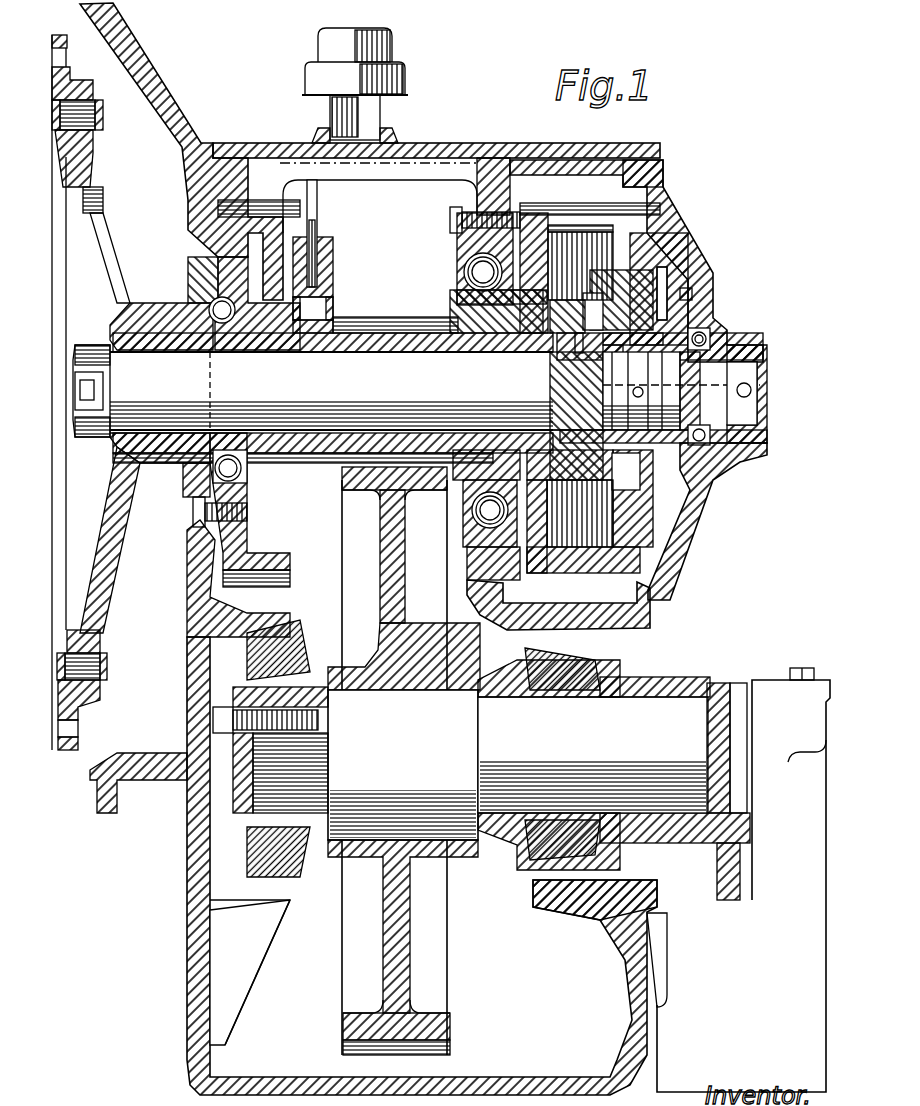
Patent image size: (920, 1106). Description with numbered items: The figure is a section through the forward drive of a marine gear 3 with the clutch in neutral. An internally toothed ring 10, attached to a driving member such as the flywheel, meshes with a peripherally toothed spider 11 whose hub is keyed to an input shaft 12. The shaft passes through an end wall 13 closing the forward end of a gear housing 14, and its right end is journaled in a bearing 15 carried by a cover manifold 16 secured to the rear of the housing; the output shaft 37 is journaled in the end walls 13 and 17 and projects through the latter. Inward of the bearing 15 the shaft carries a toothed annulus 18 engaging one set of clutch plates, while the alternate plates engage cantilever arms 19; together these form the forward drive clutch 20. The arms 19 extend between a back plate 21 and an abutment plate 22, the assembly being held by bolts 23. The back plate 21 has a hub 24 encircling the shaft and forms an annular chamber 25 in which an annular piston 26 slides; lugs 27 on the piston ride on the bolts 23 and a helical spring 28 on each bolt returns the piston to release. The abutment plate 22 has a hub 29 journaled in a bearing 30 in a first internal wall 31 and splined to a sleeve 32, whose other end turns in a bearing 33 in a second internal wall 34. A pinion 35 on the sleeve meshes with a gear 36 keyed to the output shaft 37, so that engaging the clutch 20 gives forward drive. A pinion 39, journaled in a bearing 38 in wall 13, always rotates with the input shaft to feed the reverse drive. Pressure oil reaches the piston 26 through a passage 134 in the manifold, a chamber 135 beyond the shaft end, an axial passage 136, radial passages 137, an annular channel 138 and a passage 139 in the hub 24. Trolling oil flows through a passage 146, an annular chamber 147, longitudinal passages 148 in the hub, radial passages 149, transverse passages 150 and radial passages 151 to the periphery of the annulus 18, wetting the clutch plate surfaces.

The clutch assembly 3 is at (728, 160).
The internally toothed ring 10 is at (68, 742).
The peripherally toothed spider 11 is at (100, 590).
The input shaft 12 is at (168, 386).
The end wall 13 is at (194, 238).
The gear housing 14 is at (204, 142).
The bearing 15 is at (705, 335).
The cover manifold 16 is at (705, 258).
The end wall 17 is at (640, 958).
The annulus 18 is at (550, 368).
The cantilever arms 19 is at (660, 598).
The forward drive clutch 20 is at (590, 511).
The back plate 21 is at (675, 240).
The abutment plate 22 is at (530, 205).
The bolts 23 is at (650, 212).
The hub 24 is at (680, 322).
The annular chamber 25 is at (662, 275).
The annular piston 26 is at (621, 294).
The lugs 27 is at (628, 182).
The helical spring 28 is at (572, 208).
The hub 29 is at (498, 311).
The bearing 30 is at (466, 272).
The first internal wall 31 is at (478, 190).
The sleeve 32 is at (410, 348).
The bearing 33 is at (345, 300).
The second internal wall 34 is at (308, 200).
The pinion 35 is at (360, 333).
The gear 36 is at (395, 553).
The output shaft 37 is at (435, 744).
The bearing 38 is at (196, 300).
The pinion 39 is at (218, 205).
The passage 134 is at (752, 393).
The chamber 135 is at (768, 365).
The axial passage 136 is at (733, 450).
The radial passages 137 is at (638, 385).
The annular channel 138 is at (606, 408).
The passage 139 is at (641, 408).
The passage 146 is at (690, 298).
The annular chamber 147 is at (718, 478).
The passages 148 is at (603, 356).
The radial passages 149 is at (623, 342).
The passages 150 is at (594, 336).
The radial passages 151 is at (611, 310).